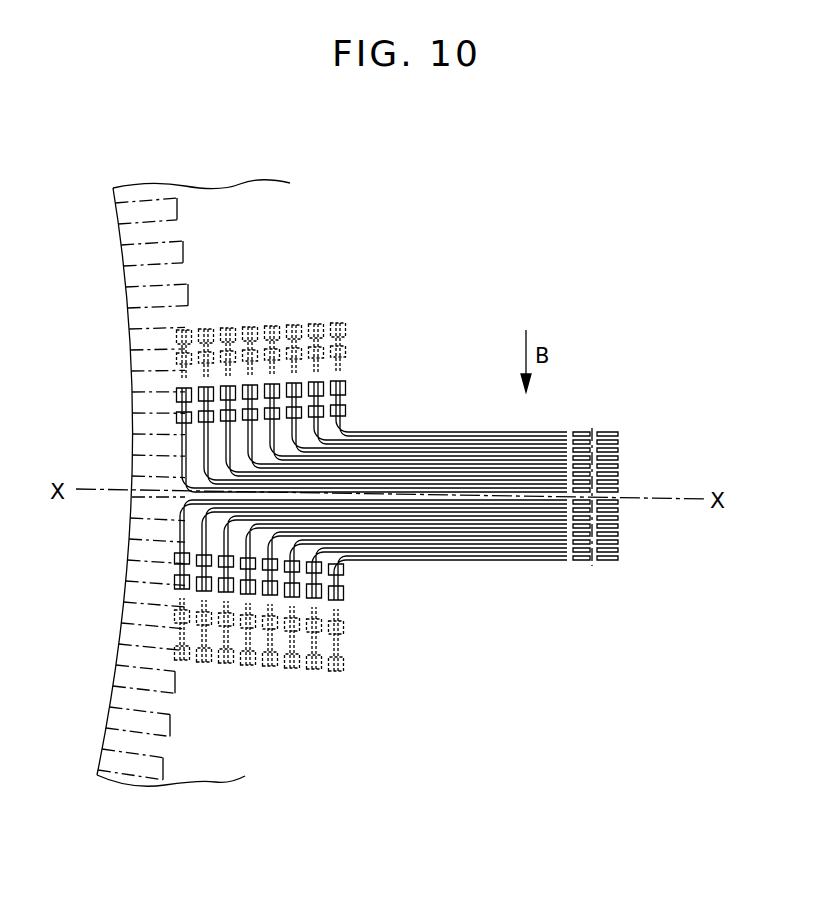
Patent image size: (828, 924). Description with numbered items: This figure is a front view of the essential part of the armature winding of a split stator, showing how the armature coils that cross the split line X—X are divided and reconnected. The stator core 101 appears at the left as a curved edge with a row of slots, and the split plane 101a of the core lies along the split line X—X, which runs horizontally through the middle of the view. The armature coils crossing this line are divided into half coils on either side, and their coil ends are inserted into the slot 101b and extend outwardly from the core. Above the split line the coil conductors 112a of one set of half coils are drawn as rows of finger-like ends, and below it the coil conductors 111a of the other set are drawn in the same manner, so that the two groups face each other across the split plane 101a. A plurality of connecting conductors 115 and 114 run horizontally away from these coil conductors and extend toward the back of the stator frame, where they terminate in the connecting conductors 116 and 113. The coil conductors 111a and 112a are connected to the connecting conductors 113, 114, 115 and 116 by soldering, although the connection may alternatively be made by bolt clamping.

The stator core 101 is at (122, 283).
The split plane 101a is at (146, 486).
The slot 101b is at (131, 313).
The coil conductor 111a is at (343, 579).
The coil conductor 112a is at (346, 338).
The connecting conductor 113 is at (620, 518).
The connecting conductor 114 is at (470, 550).
The connecting conductor 115 is at (467, 450).
The connecting conductor 116 is at (620, 452).